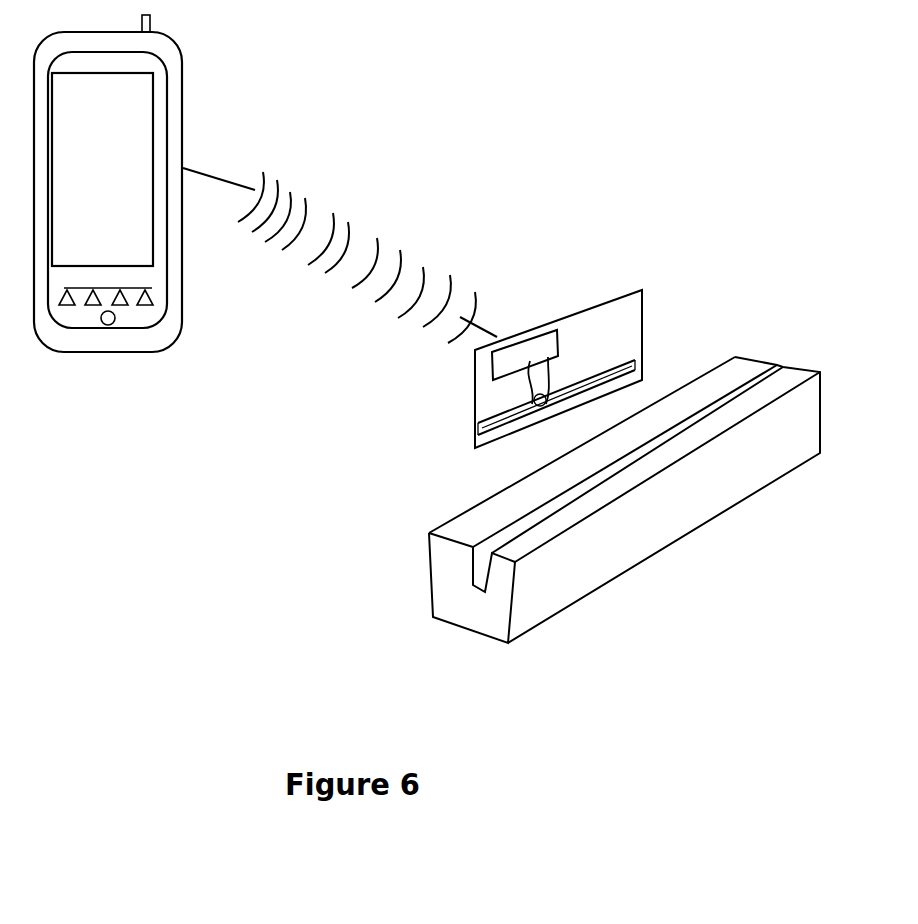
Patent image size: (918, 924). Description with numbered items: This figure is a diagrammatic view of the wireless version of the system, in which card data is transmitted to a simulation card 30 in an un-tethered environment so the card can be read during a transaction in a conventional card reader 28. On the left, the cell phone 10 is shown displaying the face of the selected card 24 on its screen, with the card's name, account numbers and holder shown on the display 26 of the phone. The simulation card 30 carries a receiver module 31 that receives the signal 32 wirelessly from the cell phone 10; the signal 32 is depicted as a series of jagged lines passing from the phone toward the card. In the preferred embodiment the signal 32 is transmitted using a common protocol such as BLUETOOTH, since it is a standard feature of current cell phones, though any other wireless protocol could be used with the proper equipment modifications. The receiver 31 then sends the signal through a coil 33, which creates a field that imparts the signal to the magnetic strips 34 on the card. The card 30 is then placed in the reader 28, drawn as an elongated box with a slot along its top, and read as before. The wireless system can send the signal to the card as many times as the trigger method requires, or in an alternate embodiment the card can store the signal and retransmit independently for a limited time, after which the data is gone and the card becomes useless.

The cell phone 10 is at (97, 376).
The selected card 24 is at (134, 235).
The display 26 is at (162, 110).
The reader 28 is at (630, 574).
The simulation card 30 is at (634, 260).
The receiver module 31 is at (540, 336).
The signal 32 is at (387, 215).
The coil 33 is at (546, 402).
The magnetic strips 34 is at (640, 360).